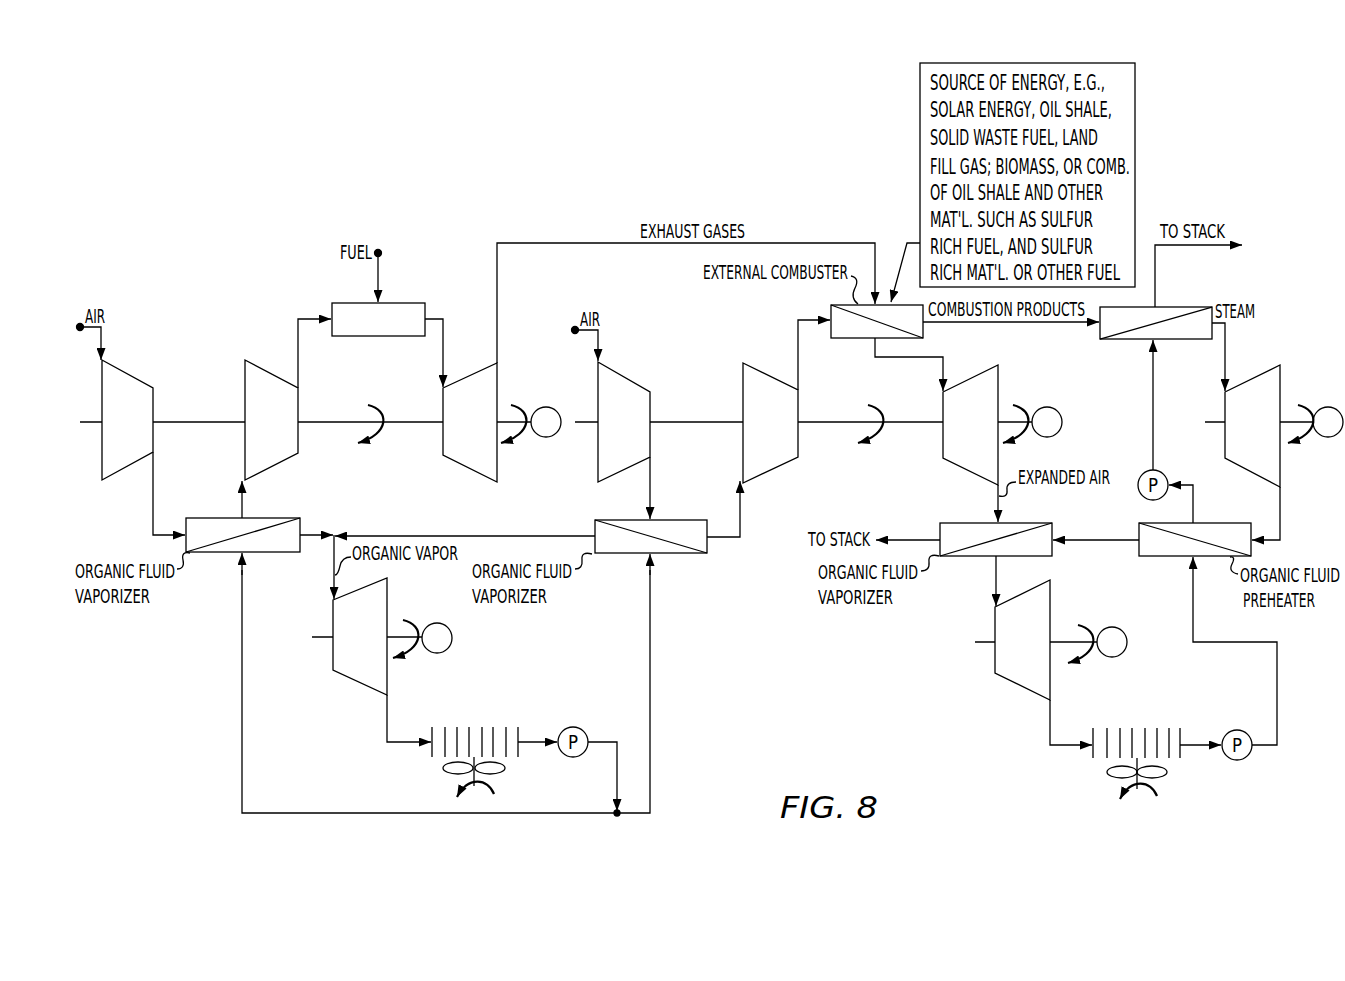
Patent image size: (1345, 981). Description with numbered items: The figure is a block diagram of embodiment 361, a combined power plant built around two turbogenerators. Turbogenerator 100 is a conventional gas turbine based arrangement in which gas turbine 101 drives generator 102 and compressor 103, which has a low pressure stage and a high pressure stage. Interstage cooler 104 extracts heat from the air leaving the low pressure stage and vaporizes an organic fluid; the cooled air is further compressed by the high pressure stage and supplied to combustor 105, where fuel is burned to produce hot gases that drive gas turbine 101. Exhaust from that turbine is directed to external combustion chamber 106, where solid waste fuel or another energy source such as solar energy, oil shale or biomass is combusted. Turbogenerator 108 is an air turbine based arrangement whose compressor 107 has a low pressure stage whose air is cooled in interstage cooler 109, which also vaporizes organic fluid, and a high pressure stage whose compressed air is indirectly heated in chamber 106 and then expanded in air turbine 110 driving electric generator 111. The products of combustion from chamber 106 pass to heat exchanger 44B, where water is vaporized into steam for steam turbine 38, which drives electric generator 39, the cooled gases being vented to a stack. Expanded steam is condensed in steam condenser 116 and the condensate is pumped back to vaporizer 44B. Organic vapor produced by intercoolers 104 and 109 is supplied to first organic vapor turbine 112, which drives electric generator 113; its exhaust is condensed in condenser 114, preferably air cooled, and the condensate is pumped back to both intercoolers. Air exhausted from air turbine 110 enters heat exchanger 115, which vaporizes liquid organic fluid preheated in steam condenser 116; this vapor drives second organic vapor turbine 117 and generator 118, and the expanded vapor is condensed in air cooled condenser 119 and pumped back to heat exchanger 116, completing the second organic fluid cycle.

The compressor 103 is at (201, 376).
The combustor 105 is at (406, 303).
The gas turbine 101 is at (458, 381).
The generator 102 is at (546, 406).
The turbogenerator 100 is at (386, 448).
The interstage cooler 104 is at (216, 553).
The compressor 107 is at (698, 378).
The interstage cooler 109 is at (621, 554).
The external combustion chamber 106 is at (849, 339).
The turbogenerator 108 is at (873, 458).
The air turbine 110 is at (968, 380).
The electric generator 111 is at (1047, 406).
The heat exchanger 44B is at (1126, 340).
The steam turbine 38 is at (1252, 378).
The electric generator 39 is at (1328, 406).
The first organic vapor turbine 112 is at (357, 685).
The electric generator 113 is at (452, 637).
The condenser 114 is at (482, 727).
The heat exchanger 115 is at (1028, 523).
The steam condenser 116 is at (1166, 557).
The second organic vapor turbine 117 is at (1020, 687).
The generator 118 is at (1127, 641).
The air cooled condenser 119 is at (1145, 728).
The embodiment 361 is at (230, 772).